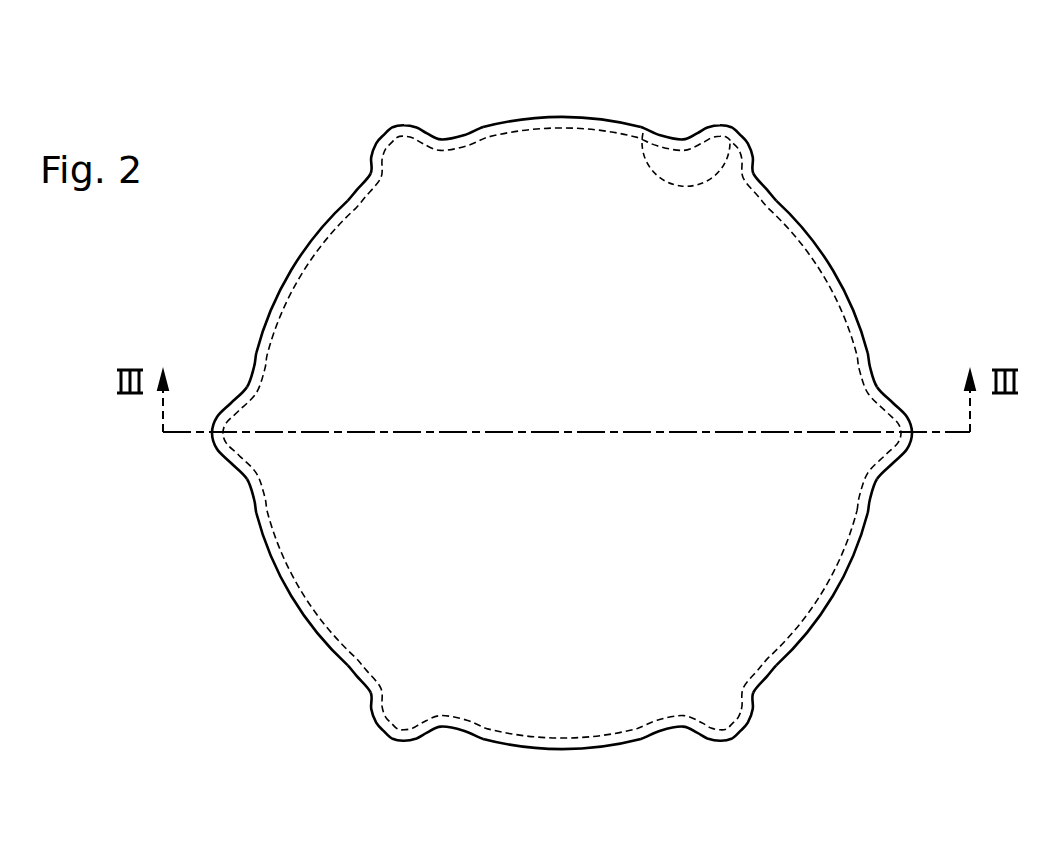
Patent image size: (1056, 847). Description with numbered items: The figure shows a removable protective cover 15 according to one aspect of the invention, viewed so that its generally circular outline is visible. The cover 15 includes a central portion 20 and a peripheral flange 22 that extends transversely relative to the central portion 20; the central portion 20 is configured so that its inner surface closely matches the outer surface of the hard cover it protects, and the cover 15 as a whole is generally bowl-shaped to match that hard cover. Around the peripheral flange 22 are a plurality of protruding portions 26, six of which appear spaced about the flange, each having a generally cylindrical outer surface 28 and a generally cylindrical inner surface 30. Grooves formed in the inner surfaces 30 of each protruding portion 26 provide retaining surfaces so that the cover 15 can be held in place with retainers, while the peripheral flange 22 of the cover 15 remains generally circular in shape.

The removable protective cover 15 is at (544, 421).
The central portion 20 is at (760, 603).
The peripheral flange 22 is at (543, 114).
The protruding portions 26 is at (404, 123).
The outer surfaces 28 is at (376, 146).
The inner surfaces 30 is at (643, 131).